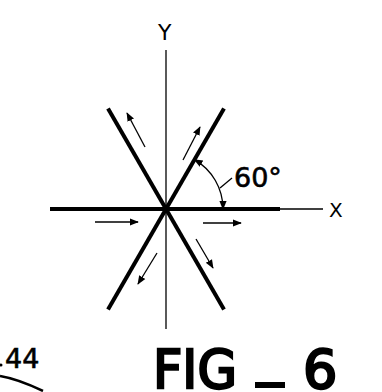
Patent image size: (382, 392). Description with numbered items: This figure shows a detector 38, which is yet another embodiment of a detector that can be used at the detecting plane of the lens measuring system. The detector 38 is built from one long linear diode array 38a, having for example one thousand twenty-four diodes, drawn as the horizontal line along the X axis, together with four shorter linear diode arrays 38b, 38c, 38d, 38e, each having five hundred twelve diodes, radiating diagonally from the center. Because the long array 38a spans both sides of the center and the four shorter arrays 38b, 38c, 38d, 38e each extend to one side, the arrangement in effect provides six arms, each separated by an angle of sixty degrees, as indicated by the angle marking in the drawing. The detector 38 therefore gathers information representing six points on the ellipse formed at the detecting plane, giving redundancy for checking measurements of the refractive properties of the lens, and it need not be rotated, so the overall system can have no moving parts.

The detector 38 is at (228, 78).
The long linear diode array 38a is at (260, 210).
The shorter linear diode array 38b is at (212, 289).
The shorter linear diode array 38c is at (116, 296).
The shorter linear diode array 38d is at (122, 133).
The shorter linear diode array 38e is at (212, 132).